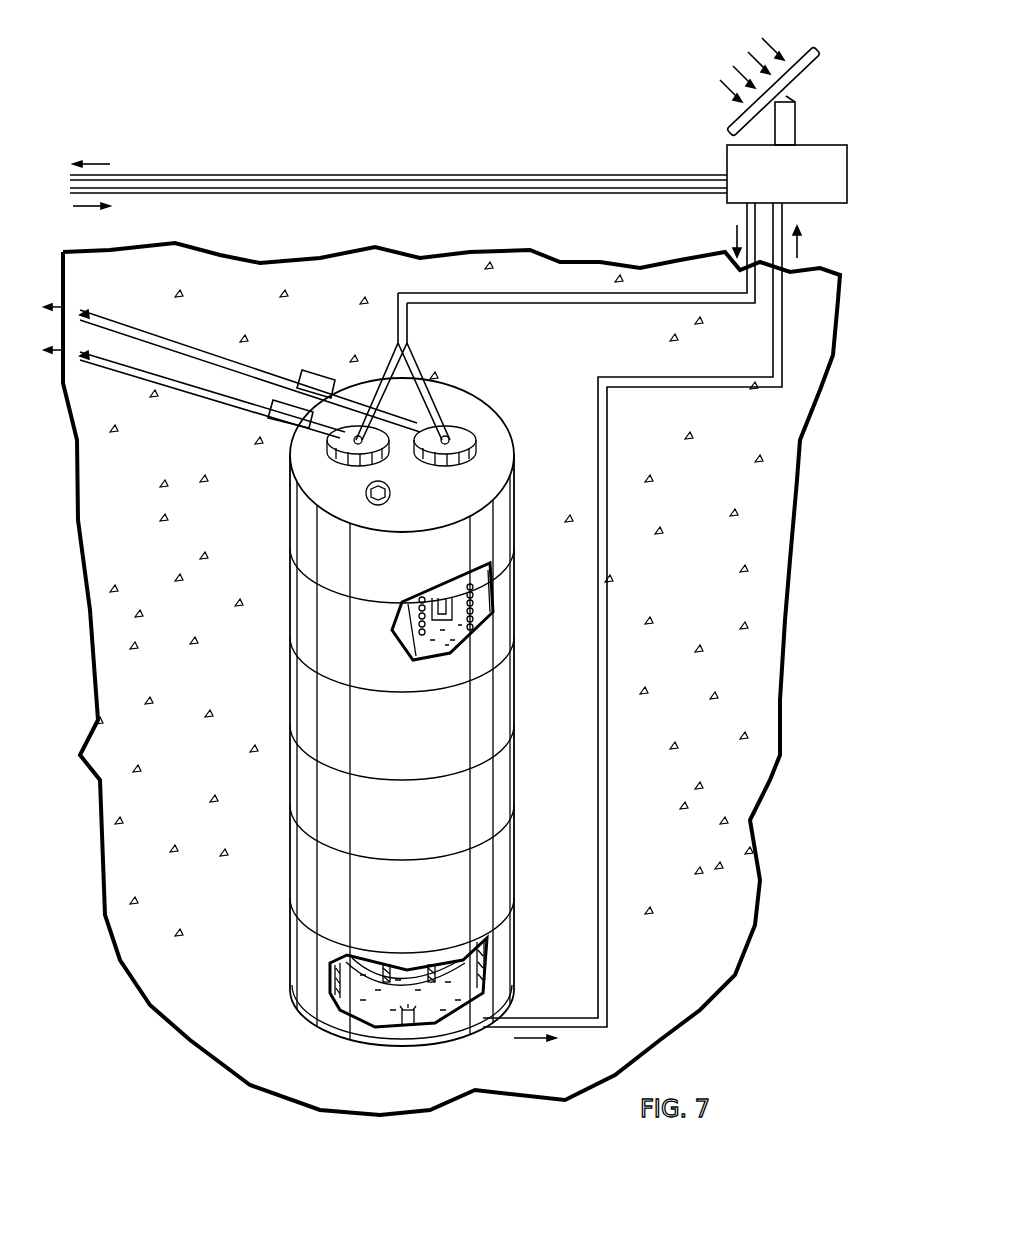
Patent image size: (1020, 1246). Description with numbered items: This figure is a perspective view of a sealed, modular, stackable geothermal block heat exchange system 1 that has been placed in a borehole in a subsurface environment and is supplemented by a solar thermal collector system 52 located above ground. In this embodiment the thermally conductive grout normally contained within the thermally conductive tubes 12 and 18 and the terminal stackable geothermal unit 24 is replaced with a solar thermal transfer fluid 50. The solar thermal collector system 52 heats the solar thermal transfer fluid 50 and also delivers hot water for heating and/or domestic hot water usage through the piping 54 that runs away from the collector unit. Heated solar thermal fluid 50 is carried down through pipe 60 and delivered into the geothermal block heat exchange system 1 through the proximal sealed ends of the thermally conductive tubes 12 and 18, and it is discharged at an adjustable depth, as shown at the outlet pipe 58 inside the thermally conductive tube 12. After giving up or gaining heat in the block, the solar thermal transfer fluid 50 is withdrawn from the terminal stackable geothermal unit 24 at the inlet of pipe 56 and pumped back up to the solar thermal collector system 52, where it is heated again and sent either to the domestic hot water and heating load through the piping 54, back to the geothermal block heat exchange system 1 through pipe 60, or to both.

The geothermal block heat exchange system 1 is at (472, 366).
The thermally conductive tube 12 is at (466, 462).
The thermally conductive tube 18 is at (330, 458).
The terminal stackable geothermal unit 24 is at (505, 930).
The solar thermal transfer fluid 50 is at (413, 657).
The solar thermal collector system 52 is at (727, 152).
The piping 54 is at (200, 177).
The pipe 56 is at (723, 390).
The outlet pipe 58 is at (446, 605).
The pipe 60 is at (722, 305).